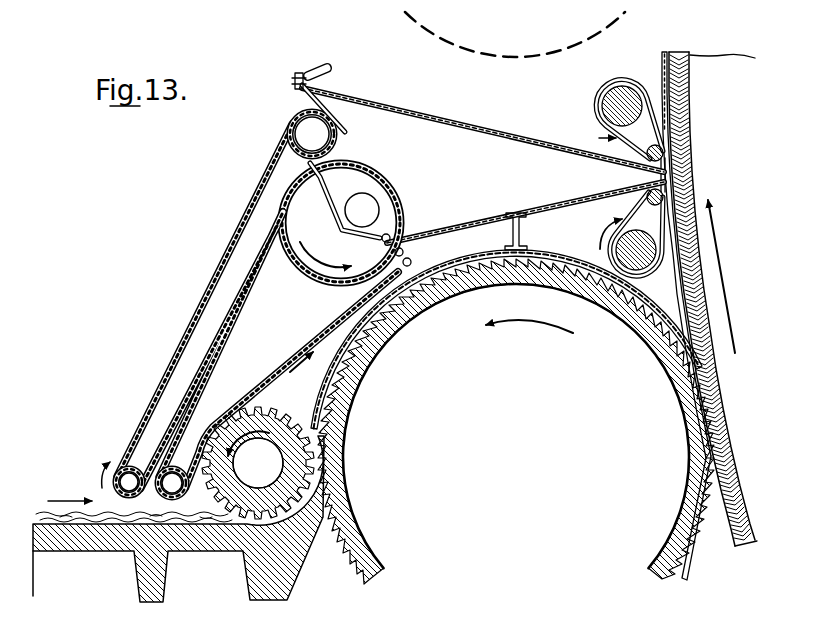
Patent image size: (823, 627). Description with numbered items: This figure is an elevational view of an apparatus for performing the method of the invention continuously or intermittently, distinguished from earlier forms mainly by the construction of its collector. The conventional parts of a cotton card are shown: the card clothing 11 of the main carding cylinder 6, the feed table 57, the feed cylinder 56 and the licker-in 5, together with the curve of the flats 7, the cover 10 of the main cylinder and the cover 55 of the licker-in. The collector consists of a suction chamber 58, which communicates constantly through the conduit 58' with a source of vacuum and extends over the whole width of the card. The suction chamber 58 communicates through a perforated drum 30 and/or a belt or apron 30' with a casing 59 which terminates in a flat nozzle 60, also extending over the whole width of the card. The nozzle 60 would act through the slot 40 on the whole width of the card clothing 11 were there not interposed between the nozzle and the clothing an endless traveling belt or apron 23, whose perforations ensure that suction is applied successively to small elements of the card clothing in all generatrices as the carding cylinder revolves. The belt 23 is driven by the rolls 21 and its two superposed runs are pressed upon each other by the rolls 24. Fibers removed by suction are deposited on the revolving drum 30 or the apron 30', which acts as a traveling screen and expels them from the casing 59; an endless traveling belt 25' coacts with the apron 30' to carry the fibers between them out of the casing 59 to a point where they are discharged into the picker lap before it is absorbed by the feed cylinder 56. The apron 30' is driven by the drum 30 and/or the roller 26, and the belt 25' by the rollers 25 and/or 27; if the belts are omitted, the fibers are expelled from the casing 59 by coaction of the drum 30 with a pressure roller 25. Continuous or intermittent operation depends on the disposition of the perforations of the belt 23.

The licker-in 5 is at (428, 308).
The main carding cylinder 6 is at (723, 397).
The curve of the flats 7 is at (586, 40).
The cover of the main cylinder 10 is at (665, 61).
The card clothing 11 is at (693, 90).
The rolls 21 is at (606, 90).
The endless traveling belt or apron 23 is at (598, 137).
The rolls 24 is at (648, 155).
The roller 25 is at (287, 134).
The endless traveling belt 25' is at (204, 300).
The roller 26 is at (178, 464).
The roller 27 is at (128, 467).
The perforated drum 30 is at (358, 244).
The belt or apron 30' is at (276, 316).
The slot 40 is at (641, 141).
The cover of the licker-in 55 is at (587, 262).
The feed cylinder 56 is at (280, 417).
The feed table 57 is at (115, 540).
The suction chamber 58 is at (336, 153).
The conduit 58' is at (362, 210).
The casing 59 is at (481, 193).
The flat nozzle 60 is at (658, 178).